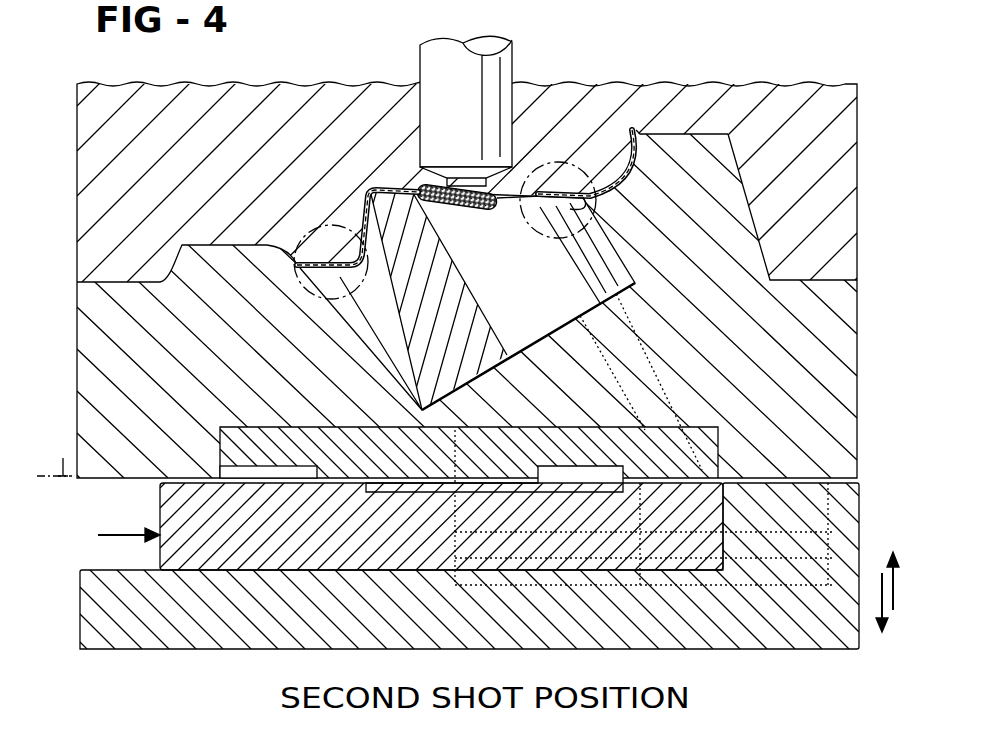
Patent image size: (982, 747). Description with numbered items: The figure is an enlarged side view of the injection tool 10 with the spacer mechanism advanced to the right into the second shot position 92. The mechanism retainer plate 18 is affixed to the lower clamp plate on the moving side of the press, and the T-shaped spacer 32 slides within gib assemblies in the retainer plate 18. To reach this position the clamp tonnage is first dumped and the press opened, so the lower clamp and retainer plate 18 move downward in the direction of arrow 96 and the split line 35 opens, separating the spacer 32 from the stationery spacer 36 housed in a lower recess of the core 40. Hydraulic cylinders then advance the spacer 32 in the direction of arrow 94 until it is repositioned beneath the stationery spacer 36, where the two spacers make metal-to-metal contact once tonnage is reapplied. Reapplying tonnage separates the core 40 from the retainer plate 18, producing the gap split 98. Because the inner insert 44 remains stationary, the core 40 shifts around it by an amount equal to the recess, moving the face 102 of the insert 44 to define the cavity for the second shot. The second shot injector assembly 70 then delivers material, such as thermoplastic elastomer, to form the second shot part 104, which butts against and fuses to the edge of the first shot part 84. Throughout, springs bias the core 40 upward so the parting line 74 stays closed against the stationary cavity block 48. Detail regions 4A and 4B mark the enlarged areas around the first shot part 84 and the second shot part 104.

The injection tool 10 is at (66, 146).
The mechanism retainer plate 18 is at (776, 650).
The spacer 32 is at (235, 565).
The split line 35 is at (62, 458).
The stationery spacer 36 is at (233, 450).
The core 40 is at (850, 400).
The inner insert 44 is at (453, 302).
The cavity block 48 is at (783, 95).
The second shot injector assembly 70 is at (500, 62).
The parting line 74 is at (830, 272).
The first shot part 84 is at (395, 187).
The second shot position 92 is at (68, 404).
The arrow 94 is at (118, 535).
The arrow 96 is at (878, 572).
The gap split 98 is at (848, 480).
The face 102 is at (543, 183).
The second shot part 104 is at (560, 215).
The detail view 4A circle 4A is at (297, 225).
The detail view 4B circle 4B is at (583, 165).